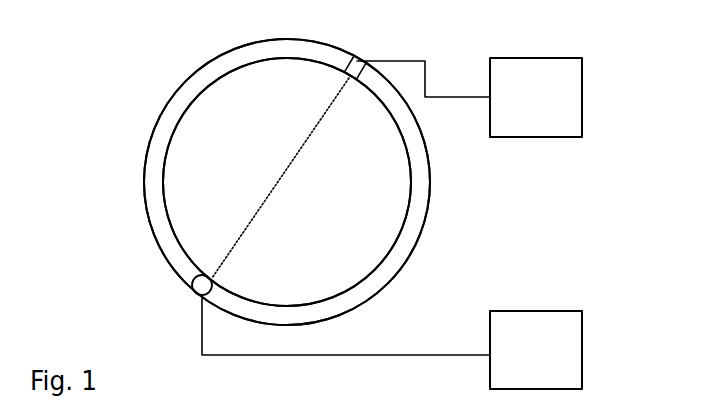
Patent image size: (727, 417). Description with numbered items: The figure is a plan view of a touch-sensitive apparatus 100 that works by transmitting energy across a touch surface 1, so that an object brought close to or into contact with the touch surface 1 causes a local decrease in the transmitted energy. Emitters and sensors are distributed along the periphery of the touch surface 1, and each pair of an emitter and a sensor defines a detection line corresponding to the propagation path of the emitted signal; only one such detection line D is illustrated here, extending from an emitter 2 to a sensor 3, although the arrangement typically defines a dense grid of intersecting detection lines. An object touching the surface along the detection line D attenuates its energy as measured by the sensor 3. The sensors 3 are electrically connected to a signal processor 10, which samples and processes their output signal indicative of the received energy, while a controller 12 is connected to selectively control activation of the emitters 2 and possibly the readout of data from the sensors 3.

The touch-sensitive apparatus 100 is at (142, 80).
The touch surface 1 is at (377, 220).
The detection line D is at (265, 198).
The sensor 3 is at (357, 60).
The signal processor 10 is at (582, 78).
The emitter 2 is at (202, 285).
The controller 12 is at (582, 342).